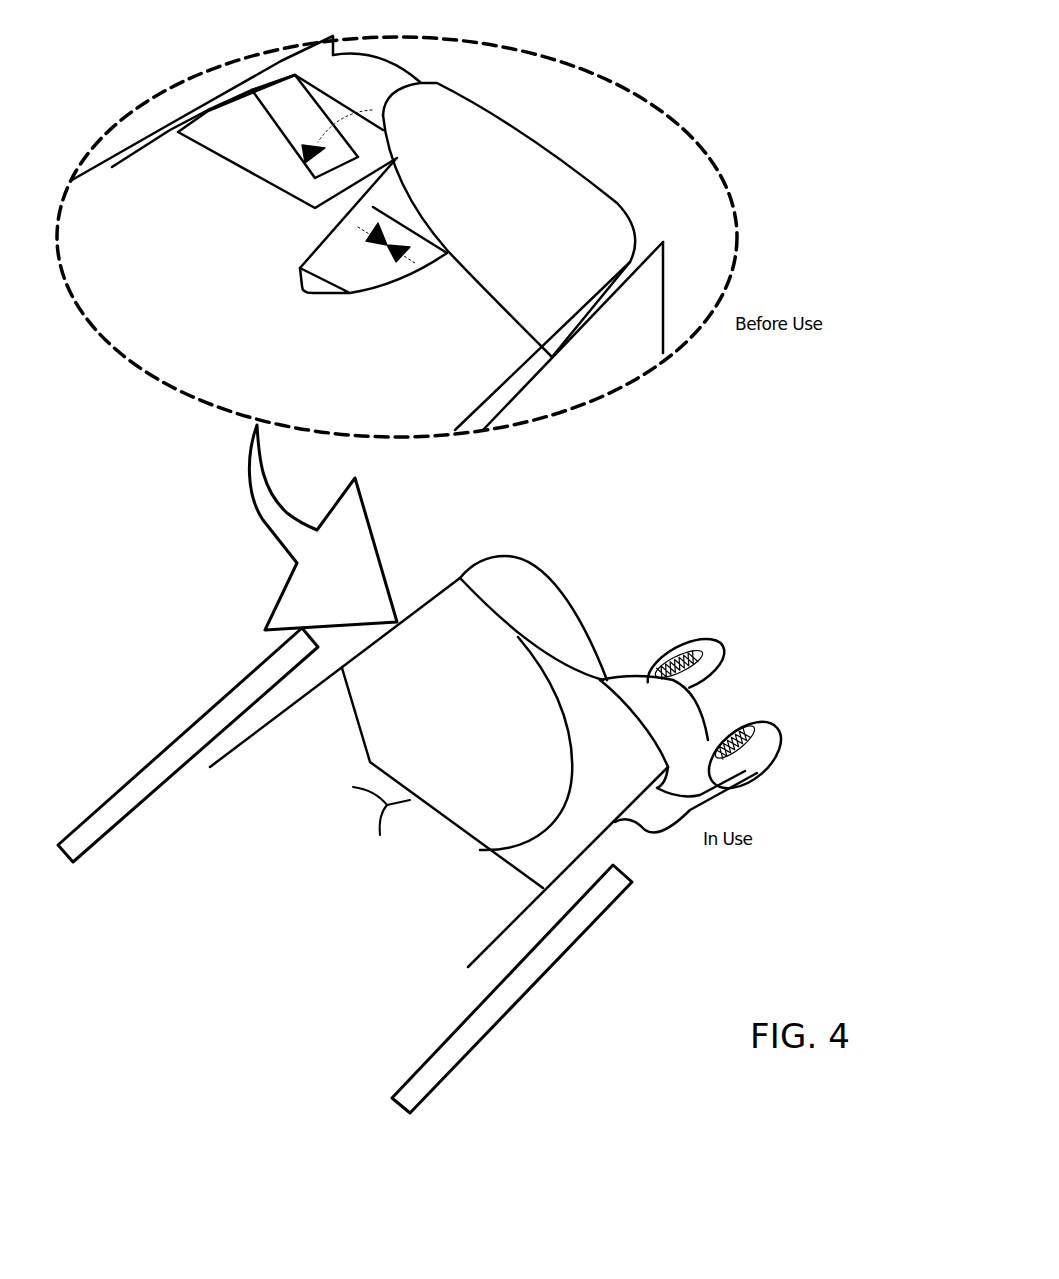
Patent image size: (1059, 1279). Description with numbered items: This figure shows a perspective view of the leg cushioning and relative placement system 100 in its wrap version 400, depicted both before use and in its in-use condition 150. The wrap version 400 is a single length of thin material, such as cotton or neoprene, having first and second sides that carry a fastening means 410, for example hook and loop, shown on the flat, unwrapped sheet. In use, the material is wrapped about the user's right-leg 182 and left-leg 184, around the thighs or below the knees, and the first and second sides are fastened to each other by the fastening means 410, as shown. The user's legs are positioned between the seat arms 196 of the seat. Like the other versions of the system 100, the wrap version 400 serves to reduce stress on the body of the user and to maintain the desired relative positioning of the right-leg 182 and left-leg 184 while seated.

The leg cushioning and relative placement system 100 is at (736, 66).
The in-use condition 150 is at (637, 545).
The right-leg 182 is at (470, 334).
The left-leg 184 is at (221, 216).
The seat arms 196 is at (148, 797).
The wrap version 400 is at (482, 66).
The fastening means 410 is at (274, 132).